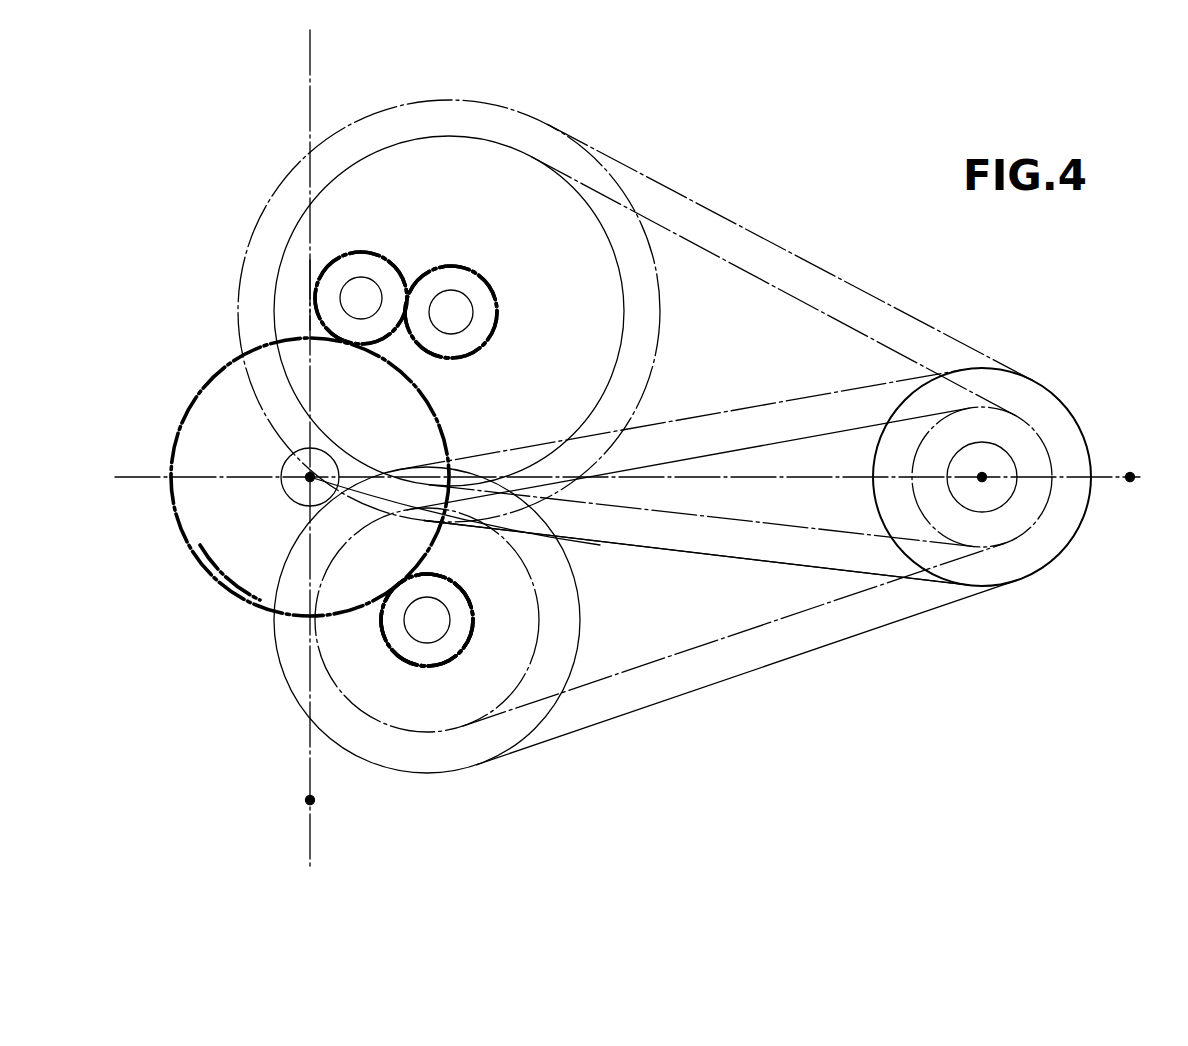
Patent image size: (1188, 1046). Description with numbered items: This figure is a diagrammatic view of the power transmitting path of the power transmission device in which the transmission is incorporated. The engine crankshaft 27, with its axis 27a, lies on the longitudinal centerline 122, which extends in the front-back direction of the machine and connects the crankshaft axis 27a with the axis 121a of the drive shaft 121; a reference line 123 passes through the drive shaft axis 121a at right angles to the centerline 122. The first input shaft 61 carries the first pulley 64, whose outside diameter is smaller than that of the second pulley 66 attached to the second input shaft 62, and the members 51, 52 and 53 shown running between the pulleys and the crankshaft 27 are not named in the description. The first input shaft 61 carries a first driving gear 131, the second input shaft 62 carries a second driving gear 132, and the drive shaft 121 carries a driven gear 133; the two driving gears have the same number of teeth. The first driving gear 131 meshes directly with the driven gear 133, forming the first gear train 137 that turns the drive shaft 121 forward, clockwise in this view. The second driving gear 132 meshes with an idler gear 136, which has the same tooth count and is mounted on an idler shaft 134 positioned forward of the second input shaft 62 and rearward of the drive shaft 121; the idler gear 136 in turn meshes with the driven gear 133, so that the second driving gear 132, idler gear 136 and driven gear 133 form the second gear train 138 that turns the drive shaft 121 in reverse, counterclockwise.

The crankshaft 27 is at (993, 460).
The axis of the crankshaft 27a is at (983, 480).
The belt 51 is at (905, 567).
The belt 52 is at (760, 675).
The belt 53 is at (807, 262).
The first input shaft 61 is at (429, 632).
The second input shaft 62 is at (453, 303).
The first pulley 64 is at (572, 655).
The second pulley 66 is at (653, 253).
The drive shaft 121 is at (293, 492).
The axis of the drive shaft 121a is at (310, 477).
The centerline 122 is at (1130, 478).
The reference line 123 is at (310, 800).
The first driving gear 131 is at (472, 640).
The second driving gear 132 is at (496, 296).
The driven gear 133 is at (232, 595).
The idler shaft 134 is at (362, 293).
The idler gear 136 is at (320, 268).
The first gear set or train 137 is at (370, 628).
The second gear set or train 138 is at (303, 292).